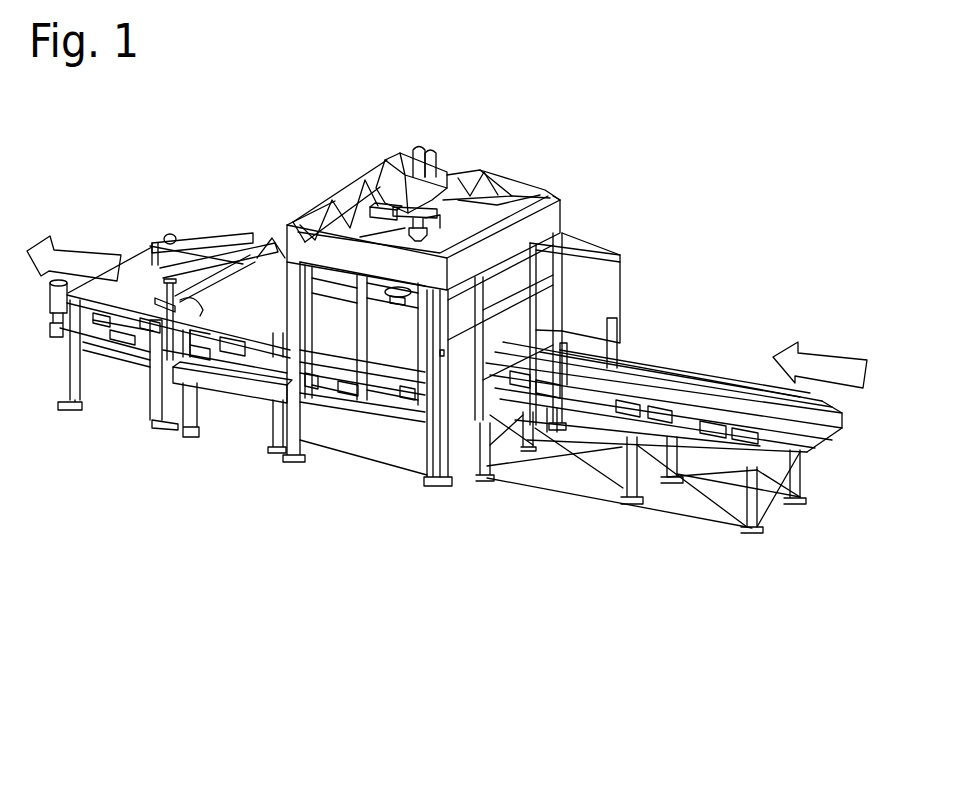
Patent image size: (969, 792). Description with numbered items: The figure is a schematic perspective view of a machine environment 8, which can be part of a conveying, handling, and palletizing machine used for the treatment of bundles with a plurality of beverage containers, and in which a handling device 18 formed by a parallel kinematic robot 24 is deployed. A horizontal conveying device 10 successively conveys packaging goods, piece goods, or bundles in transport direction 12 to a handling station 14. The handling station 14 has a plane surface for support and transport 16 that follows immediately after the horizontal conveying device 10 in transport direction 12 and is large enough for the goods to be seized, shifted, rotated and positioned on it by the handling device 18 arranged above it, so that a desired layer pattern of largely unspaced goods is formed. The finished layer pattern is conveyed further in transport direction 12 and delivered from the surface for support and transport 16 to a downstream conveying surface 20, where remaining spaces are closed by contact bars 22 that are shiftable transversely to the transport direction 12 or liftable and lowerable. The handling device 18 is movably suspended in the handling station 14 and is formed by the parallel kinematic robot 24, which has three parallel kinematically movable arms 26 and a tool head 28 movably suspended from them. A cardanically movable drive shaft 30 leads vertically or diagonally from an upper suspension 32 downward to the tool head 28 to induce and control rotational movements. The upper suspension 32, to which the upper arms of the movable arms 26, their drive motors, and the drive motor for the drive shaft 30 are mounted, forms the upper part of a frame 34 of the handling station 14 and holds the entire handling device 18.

The machine environment 8 is at (343, 596).
The horizontal conveying device 10 is at (700, 363).
The transport direction 12 is at (447, 312).
The handling station 14 is at (353, 470).
The surface for support and transport 16 is at (386, 344).
The handling device 18 is at (456, 161).
The downstream conveying surface 20 is at (147, 242).
The contact bars 22 is at (252, 253).
The parallel kinematic robot 24 is at (358, 186).
The movable arms 26 is at (352, 185).
The tool head 28 is at (398, 294).
The drive shaft 30 is at (387, 206).
The upper suspension 32 is at (395, 204).
The frame 34 is at (441, 378).